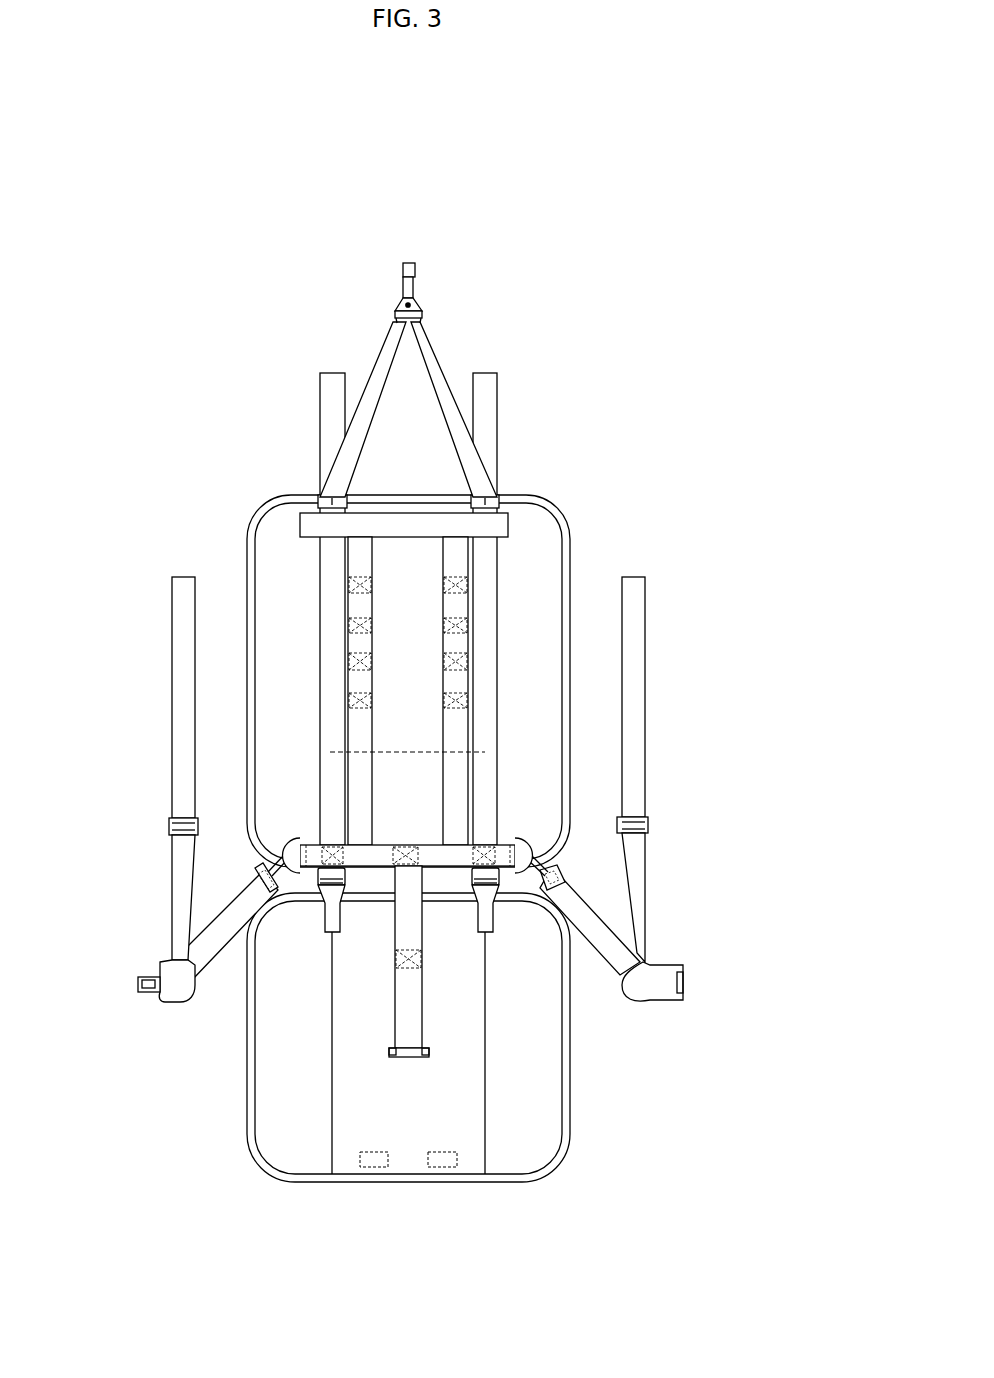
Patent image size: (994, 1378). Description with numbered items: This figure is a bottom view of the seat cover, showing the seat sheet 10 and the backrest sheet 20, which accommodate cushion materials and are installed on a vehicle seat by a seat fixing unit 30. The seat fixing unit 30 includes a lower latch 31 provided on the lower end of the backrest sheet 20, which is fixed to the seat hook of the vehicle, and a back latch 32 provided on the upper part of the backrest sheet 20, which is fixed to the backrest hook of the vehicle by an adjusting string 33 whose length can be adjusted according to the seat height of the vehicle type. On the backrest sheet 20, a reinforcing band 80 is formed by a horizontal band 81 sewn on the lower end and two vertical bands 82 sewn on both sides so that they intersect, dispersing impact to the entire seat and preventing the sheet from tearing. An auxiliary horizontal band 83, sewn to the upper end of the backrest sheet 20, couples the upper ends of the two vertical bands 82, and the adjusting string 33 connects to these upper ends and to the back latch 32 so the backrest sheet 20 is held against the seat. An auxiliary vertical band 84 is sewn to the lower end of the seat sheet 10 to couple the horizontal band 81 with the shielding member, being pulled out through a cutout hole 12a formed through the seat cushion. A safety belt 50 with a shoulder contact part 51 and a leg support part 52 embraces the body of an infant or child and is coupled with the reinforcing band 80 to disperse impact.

The seat sheet 10 is at (548, 1117).
The cutout hole 12a is at (422, 1057).
The backrest sheet 20 is at (272, 532).
The seat fixing unit 30 is at (443, 637).
The lower latch 31 is at (482, 908).
The back latch 32 is at (413, 262).
The adjusting string 33 is at (432, 372).
The safety belt 50 is at (484, 789).
The shoulder contact part 51 is at (633, 750).
The leg support part 52 is at (600, 927).
The reinforcing band 80 is at (538, 726).
The horizontal band 81 is at (445, 855).
The vertical band 82 is at (468, 610).
The auxiliary horizontal band 83 is at (420, 525).
The auxiliary vertical band 84 is at (407, 890).